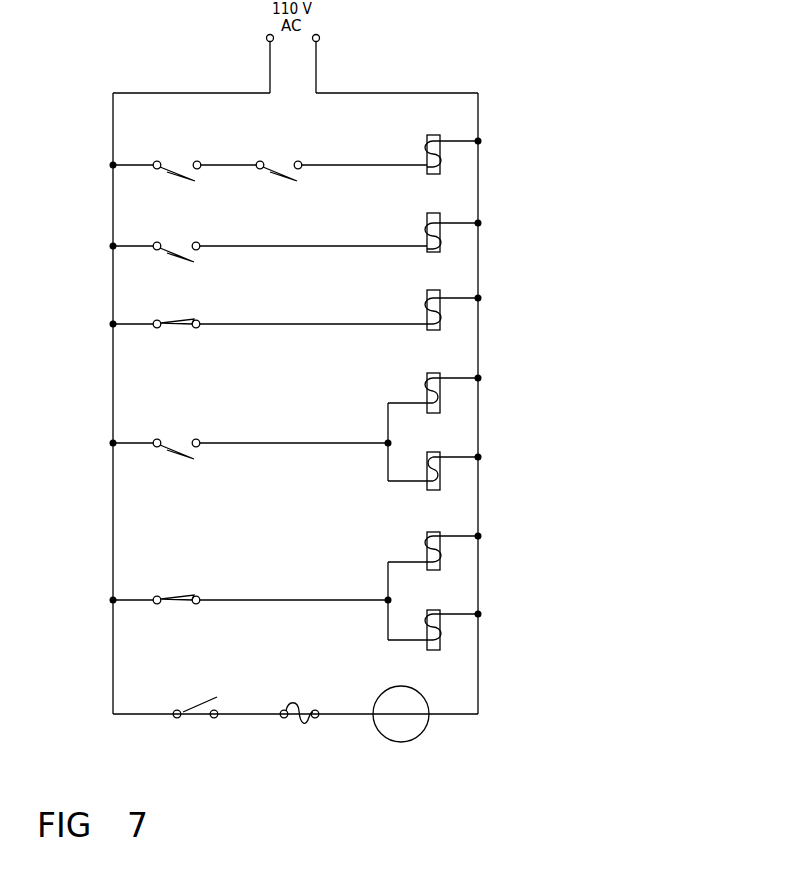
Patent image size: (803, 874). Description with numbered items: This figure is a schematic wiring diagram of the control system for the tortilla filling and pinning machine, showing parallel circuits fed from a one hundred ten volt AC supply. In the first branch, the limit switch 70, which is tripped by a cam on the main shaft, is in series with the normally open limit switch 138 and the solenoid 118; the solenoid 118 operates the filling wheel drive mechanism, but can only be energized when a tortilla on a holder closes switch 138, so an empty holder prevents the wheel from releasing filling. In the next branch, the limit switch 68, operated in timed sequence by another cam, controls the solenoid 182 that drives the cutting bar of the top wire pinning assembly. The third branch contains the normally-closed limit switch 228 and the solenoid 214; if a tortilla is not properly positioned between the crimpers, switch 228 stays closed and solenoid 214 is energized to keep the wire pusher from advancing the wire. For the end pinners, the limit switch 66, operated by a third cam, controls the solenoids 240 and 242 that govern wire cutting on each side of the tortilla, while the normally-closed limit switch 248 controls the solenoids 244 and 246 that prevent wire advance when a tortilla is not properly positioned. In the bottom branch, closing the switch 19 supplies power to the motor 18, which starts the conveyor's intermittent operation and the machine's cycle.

The limit switch 70 is at (181, 163).
The limit switch 138 is at (283, 163).
The solenoid 118 is at (427, 136).
The limit switch 68 is at (178, 243).
The solenoid 182 is at (427, 214).
The limit switch 228 is at (184, 315).
The solenoid 214 is at (427, 291).
The limit switch 66 is at (179, 442).
The solenoid 240 is at (427, 374).
The solenoid 242 is at (437, 452).
The limit switch 248 is at (183, 597).
The solenoid 244 is at (427, 533).
The solenoid 246 is at (437, 610).
The switch 19 is at (202, 699).
The motor 18 is at (417, 690).